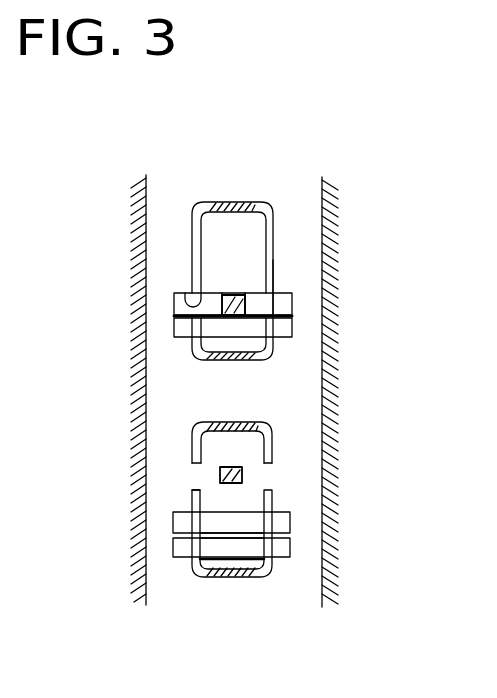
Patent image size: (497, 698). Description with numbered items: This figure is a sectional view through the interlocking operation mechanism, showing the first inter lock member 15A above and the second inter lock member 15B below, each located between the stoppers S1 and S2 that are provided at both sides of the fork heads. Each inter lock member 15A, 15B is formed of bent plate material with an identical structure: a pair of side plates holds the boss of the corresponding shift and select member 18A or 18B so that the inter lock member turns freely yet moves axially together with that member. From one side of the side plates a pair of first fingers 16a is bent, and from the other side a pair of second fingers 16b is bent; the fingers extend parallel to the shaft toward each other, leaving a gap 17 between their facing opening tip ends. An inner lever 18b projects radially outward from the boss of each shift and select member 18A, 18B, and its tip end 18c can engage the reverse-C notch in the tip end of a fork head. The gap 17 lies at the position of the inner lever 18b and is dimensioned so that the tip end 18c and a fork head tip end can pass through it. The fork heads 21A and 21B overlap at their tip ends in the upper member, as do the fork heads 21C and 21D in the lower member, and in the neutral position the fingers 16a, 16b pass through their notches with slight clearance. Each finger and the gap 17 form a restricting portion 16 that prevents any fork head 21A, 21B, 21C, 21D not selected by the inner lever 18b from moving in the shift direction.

The stopper S1 is at (322, 193).
The stopper S2 is at (149, 190).
The first inter lock member 15A is at (246, 380).
The second inter lock member 15B is at (289, 563).
The restricting portion 16 is at (280, 263).
The first fingers 16a is at (197, 240).
The second fingers 16b is at (196, 342).
The gap 17 is at (190, 296).
The first shift and select member 18A is at (211, 310).
The second shift and select member 18B is at (223, 486).
The inner lever 18b is at (238, 294).
The tip end of inner lever 18c is at (210, 292).
The first fork head 21A is at (291, 300).
The second fork head 21B is at (292, 332).
The third fork head 21C is at (292, 520).
The fourth fork head 21D is at (292, 548).